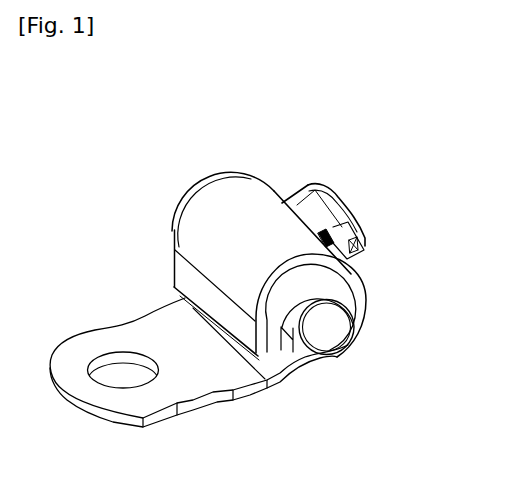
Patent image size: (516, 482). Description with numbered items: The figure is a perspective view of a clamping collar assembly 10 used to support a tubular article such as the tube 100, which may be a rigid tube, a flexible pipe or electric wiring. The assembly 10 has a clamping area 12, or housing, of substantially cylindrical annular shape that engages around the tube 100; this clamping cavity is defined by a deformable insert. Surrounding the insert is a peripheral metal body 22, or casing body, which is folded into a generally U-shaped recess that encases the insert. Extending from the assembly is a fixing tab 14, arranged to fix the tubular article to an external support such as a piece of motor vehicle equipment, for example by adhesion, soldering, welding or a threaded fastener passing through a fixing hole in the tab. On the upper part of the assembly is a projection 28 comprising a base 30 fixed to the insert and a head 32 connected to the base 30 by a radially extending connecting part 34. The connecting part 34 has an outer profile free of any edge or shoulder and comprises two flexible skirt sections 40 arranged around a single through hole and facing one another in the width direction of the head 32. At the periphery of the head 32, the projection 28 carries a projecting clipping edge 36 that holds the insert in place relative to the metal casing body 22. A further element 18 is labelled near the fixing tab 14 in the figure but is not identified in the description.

The tube 100 is at (181, 196).
The clamping collar assembly 10 is at (256, 157).
The clamping area 12 is at (293, 287).
The fixing tab 14 is at (192, 370).
The mounting hole 18 is at (117, 377).
The peripheral metal body 22 is at (222, 238).
The projection 28 is at (380, 191).
The base 30 is at (340, 284).
The head 32 is at (358, 231).
The connecting part 34 is at (285, 200).
The projecting clipping edge 36 is at (362, 248).
The flexible skirt sections 40 is at (303, 205).